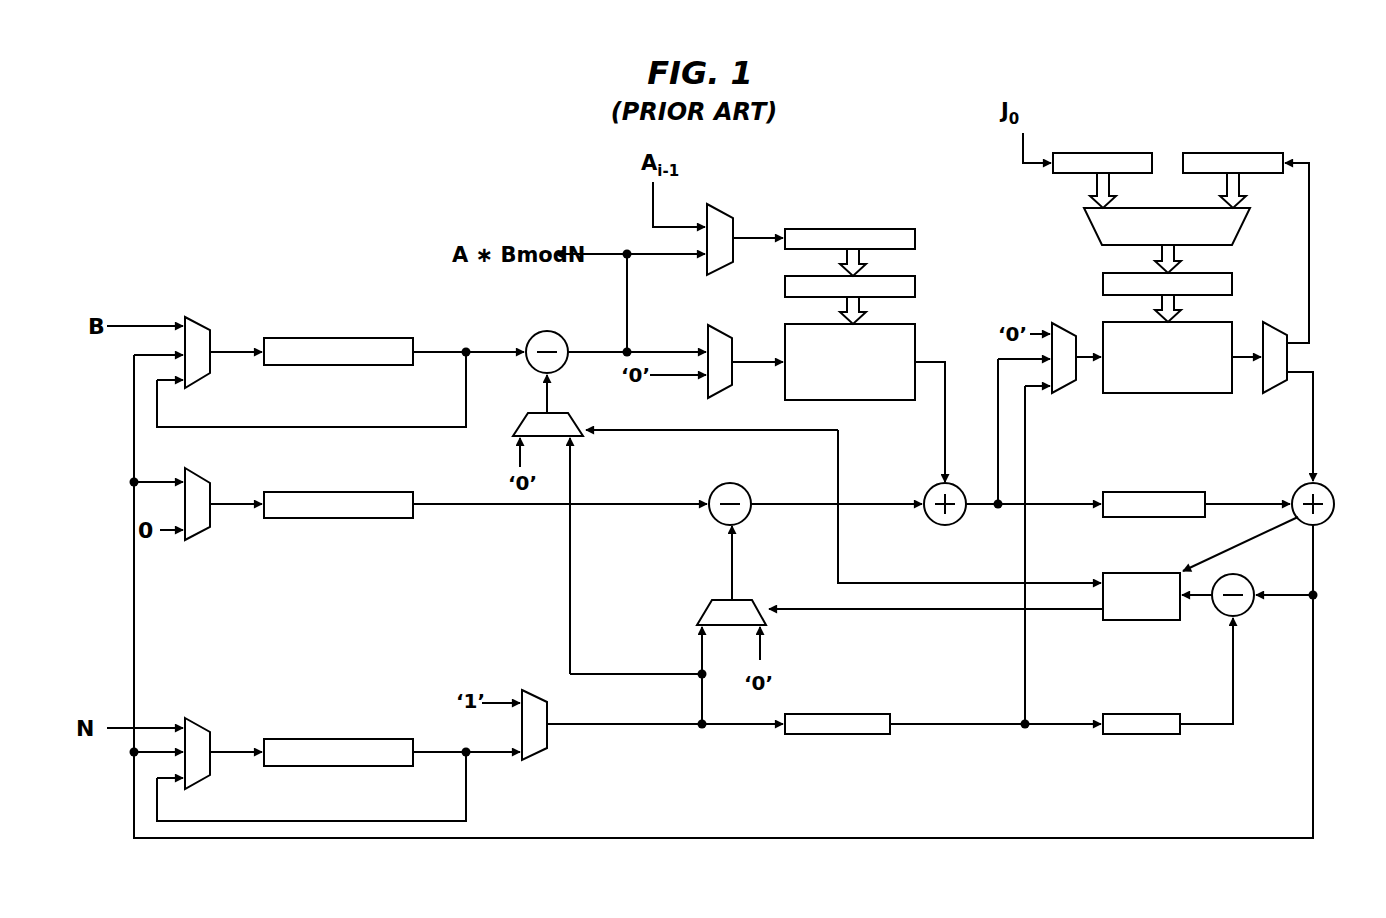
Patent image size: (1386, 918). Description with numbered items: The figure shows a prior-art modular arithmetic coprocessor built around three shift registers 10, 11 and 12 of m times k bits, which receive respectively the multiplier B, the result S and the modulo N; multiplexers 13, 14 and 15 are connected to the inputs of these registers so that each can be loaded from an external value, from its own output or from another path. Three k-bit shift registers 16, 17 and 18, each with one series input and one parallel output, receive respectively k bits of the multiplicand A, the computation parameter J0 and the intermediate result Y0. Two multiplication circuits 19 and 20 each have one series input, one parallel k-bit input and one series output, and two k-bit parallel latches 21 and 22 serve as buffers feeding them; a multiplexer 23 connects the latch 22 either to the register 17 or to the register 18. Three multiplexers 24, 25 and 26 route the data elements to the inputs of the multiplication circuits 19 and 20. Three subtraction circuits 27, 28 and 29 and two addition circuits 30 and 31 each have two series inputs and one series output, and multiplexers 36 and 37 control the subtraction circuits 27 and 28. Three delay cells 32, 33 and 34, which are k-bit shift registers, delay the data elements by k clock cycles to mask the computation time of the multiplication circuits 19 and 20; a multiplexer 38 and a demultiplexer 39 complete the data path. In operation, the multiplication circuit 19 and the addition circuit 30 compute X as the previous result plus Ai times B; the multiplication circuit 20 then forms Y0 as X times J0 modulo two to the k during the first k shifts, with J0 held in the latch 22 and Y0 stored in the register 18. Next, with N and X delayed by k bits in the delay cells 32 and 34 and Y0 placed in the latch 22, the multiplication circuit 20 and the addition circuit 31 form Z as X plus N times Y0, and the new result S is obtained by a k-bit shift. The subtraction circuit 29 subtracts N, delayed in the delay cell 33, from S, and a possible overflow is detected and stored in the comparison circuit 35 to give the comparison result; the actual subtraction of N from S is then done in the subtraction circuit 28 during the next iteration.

The shift register 10 is at (336, 338).
The shift register 11 is at (330, 519).
The shift register 12 is at (345, 739).
The multiplexer 13 is at (197, 320).
The multiplexer 14 is at (197, 541).
The multiplexer 15 is at (197, 718).
The k-bit shift register 16 is at (915, 240).
The k-bit shift register 17 is at (1125, 153).
The k-bit shift register 18 is at (1220, 153).
The multiplication circuit 19 is at (872, 401).
The multiplication circuit 20 is at (1168, 394).
The k-bit parallel latch 21 is at (915, 287).
The k-bit parallel latch 22 is at (1232, 286).
The multiplexer 23 is at (1250, 218).
The multiplexer 24 is at (727, 216).
The multiplexer 25 is at (725, 337).
The multiplexer 26 is at (1060, 323).
The subtraction circuit 27 is at (545, 331).
The subtraction circuit 28 is at (742, 486).
The subtraction circuit 29 is at (1248, 576).
The addition circuit 30 is at (938, 524).
The addition circuit 31 is at (1335, 510).
The delay cell 32 is at (838, 734).
The delay cell 33 is at (1135, 735).
The delay cell 34 is at (1150, 518).
The comparison circuit 35 is at (1152, 621).
The multiplexer 36 is at (513, 432).
The multiplexer 37 is at (749, 600).
The multiplexer 38 is at (540, 752).
The demultiplexer 39 is at (1275, 394).